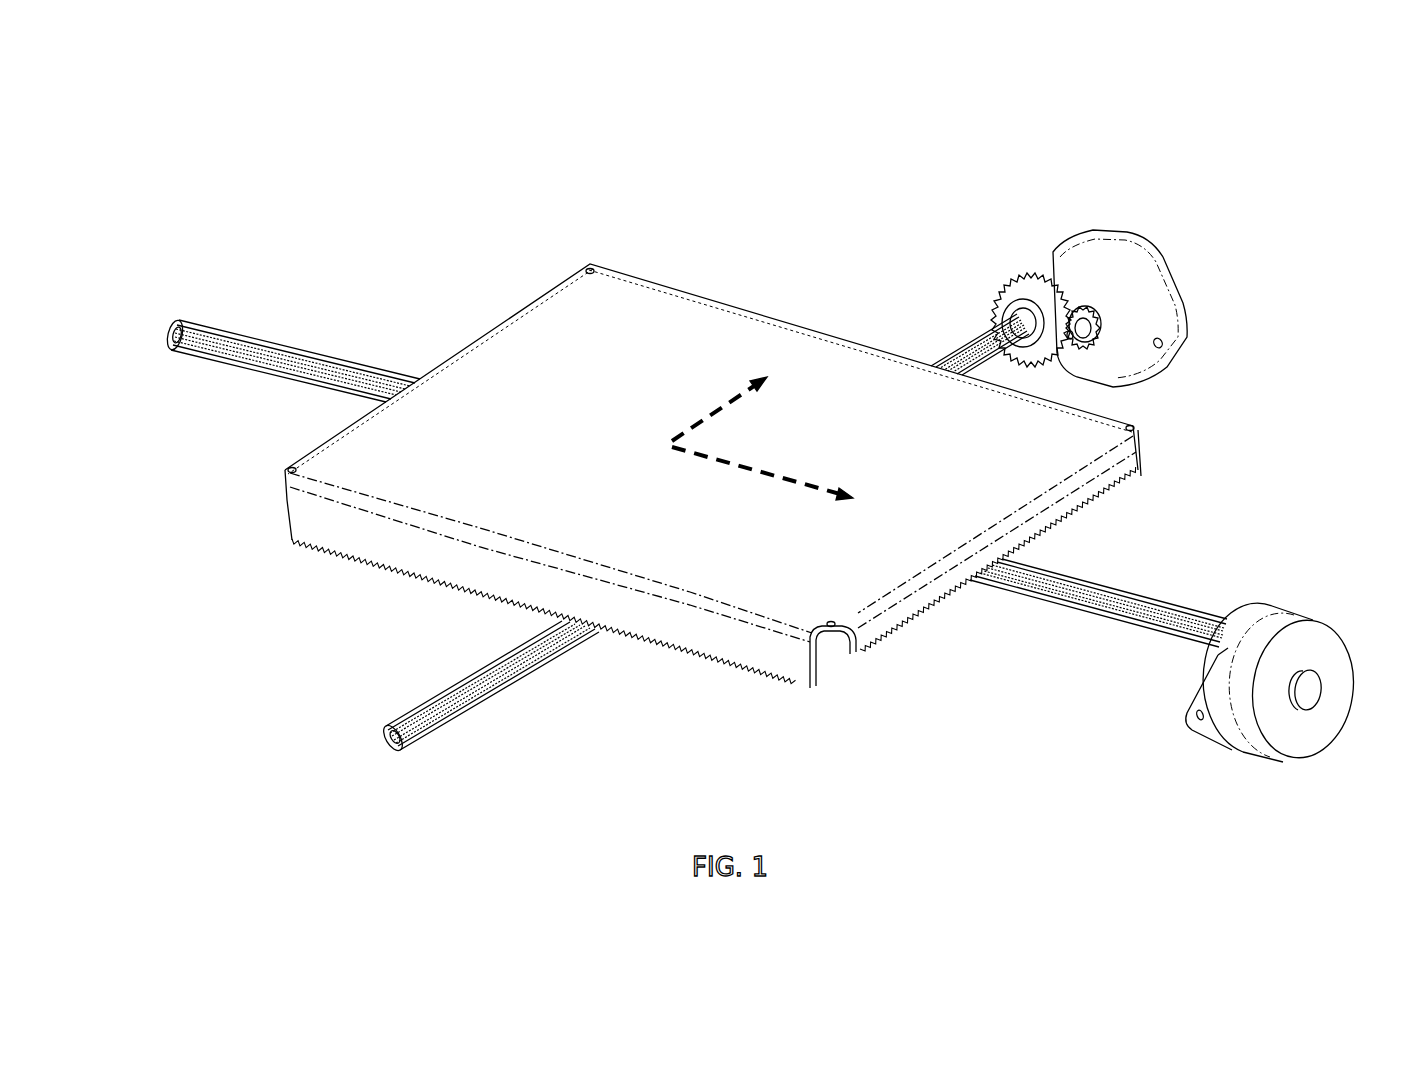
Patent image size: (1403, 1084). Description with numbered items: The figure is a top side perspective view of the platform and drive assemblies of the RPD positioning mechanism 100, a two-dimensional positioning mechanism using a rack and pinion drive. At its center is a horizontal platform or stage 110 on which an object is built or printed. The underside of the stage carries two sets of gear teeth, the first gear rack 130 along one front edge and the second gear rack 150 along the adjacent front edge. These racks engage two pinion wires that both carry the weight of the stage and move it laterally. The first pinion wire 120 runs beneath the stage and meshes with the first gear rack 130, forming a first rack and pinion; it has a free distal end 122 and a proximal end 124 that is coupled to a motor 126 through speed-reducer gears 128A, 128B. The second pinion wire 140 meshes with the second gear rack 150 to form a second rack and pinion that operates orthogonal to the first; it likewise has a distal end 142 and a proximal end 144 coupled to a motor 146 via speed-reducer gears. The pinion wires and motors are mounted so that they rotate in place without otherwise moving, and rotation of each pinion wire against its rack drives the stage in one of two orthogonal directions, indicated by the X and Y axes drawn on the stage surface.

The RPD positioning mechanism 100 is at (520, 185).
The stage 110 is at (713, 476).
The first pinion wire 120 is at (493, 698).
The distal end 122 is at (398, 753).
The proximal end 124 is at (987, 328).
The motor 126 is at (1055, 272).
The speed-reducer gear 128A is at (1098, 320).
The speed-reducer gear 128B is at (998, 292).
The first gear rack 130 is at (393, 573).
The second pinion wire 140 is at (278, 340).
The distal end 142 is at (183, 323).
The proximal end 144 is at (1222, 623).
The motor 146 is at (1238, 732).
The second gear rack 150 is at (885, 638).